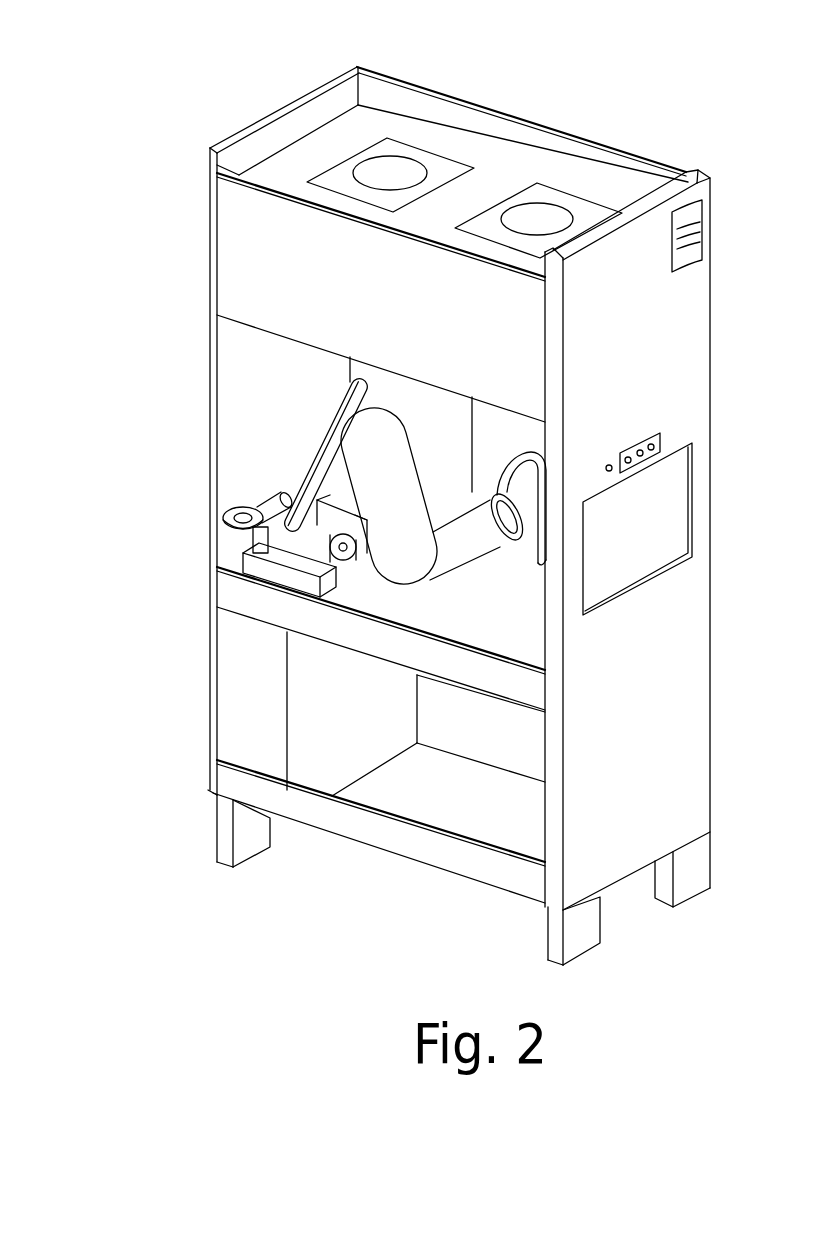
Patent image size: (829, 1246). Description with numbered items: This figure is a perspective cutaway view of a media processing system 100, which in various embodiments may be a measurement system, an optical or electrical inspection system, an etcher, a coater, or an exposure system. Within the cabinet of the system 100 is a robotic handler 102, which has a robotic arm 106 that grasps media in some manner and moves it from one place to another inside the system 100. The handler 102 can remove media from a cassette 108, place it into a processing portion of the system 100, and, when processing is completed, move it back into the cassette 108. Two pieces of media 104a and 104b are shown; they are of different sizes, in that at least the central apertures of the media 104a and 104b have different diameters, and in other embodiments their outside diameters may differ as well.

The media processing system 100 is at (783, 40).
The robotic handler 102 is at (250, 461).
The media 104a is at (228, 517).
The media 104b is at (345, 560).
The robotic arm 106 is at (333, 447).
The cassette 108 is at (310, 560).